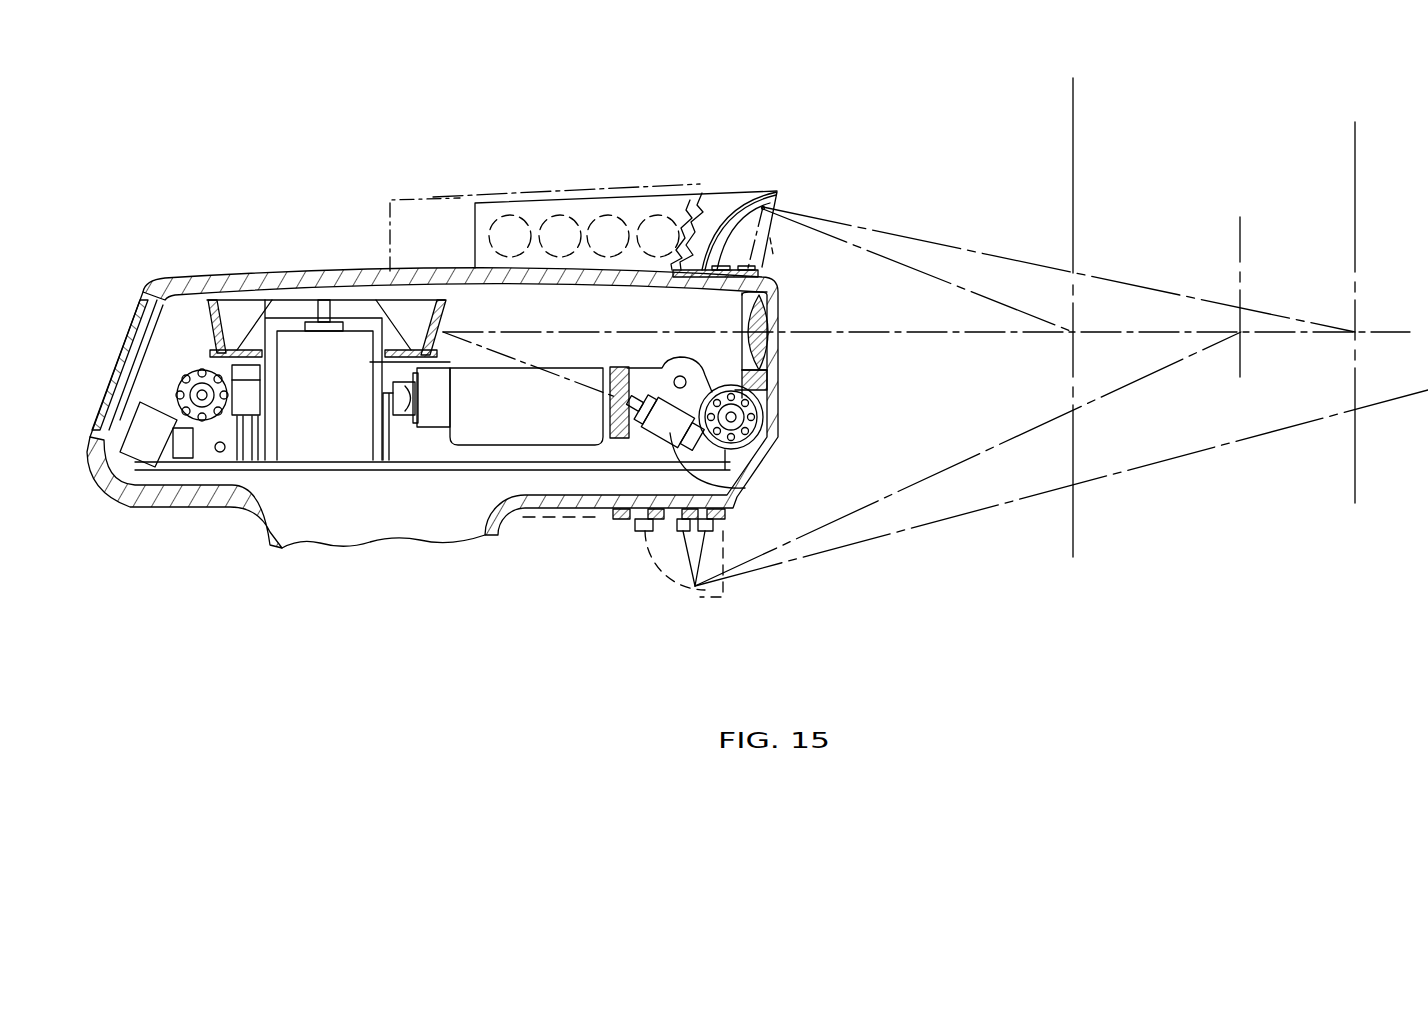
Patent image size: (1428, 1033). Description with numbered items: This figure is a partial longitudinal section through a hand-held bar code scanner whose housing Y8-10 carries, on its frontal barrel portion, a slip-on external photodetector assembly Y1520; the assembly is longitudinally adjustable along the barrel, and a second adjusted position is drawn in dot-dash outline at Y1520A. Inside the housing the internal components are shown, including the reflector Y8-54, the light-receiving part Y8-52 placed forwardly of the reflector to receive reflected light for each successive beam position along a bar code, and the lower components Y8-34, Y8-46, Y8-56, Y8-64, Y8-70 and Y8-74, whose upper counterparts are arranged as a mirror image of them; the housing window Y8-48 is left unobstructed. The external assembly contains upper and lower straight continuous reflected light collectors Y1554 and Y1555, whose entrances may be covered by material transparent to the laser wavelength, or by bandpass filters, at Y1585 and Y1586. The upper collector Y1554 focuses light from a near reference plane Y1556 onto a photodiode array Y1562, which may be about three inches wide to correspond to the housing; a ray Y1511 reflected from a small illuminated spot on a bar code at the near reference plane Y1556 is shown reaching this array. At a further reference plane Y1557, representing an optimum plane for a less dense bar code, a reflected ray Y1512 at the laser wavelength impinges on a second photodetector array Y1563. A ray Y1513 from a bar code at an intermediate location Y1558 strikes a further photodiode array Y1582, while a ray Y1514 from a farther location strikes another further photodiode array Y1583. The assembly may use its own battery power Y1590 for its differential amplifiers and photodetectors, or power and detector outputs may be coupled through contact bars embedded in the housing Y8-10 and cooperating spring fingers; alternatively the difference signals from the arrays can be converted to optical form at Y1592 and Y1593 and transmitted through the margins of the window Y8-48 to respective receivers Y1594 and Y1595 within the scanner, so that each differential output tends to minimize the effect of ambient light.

The housing Y8-10 is at (190, 270).
The lower component Y8-34 is at (750, 481).
The lower component Y8-46 is at (636, 418).
The window Y8-48 is at (755, 345).
The light-receiving part Y8-52 is at (405, 415).
The reflector Y8-54 is at (612, 406).
The lower component Y8-56 is at (620, 368).
The lower component Y8-64 is at (657, 368).
The lower component Y8-70 is at (752, 430).
The lower component Y8-74 is at (735, 417).
The reflected laser light ray Y1511 is at (1047, 320).
The reflected light ray Y1512 is at (1147, 287).
The reflected light ray Y1513 is at (1097, 400).
The reflected light ray Y1514 is at (1210, 450).
The external photodetector assembly Y1520 is at (745, 203).
The second position of assembly Y1520A is at (455, 193).
The upper reflected light collector Y1554 is at (718, 263).
The lower reflected light collector Y1555 is at (687, 592).
The near reference plane Y1556 is at (1073, 147).
The further reference plane Y1557 is at (1357, 160).
The intermediate location Y1558 is at (1243, 250).
The photodiode array Y1562 is at (778, 203).
The second photodetector array Y1563 is at (690, 213).
The further photodiode array Y1582 is at (710, 530).
The further photodiode array Y1583 is at (678, 531).
The transparent cover material Y1585 is at (768, 243).
The transparent cover material Y1586 is at (725, 590).
The battery power Y1590 is at (508, 216).
The optical converter Y1592 is at (758, 298).
The optical converter Y1593 is at (767, 357).
The receiver Y1594 is at (742, 318).
The receiver Y1595 is at (530, 351).